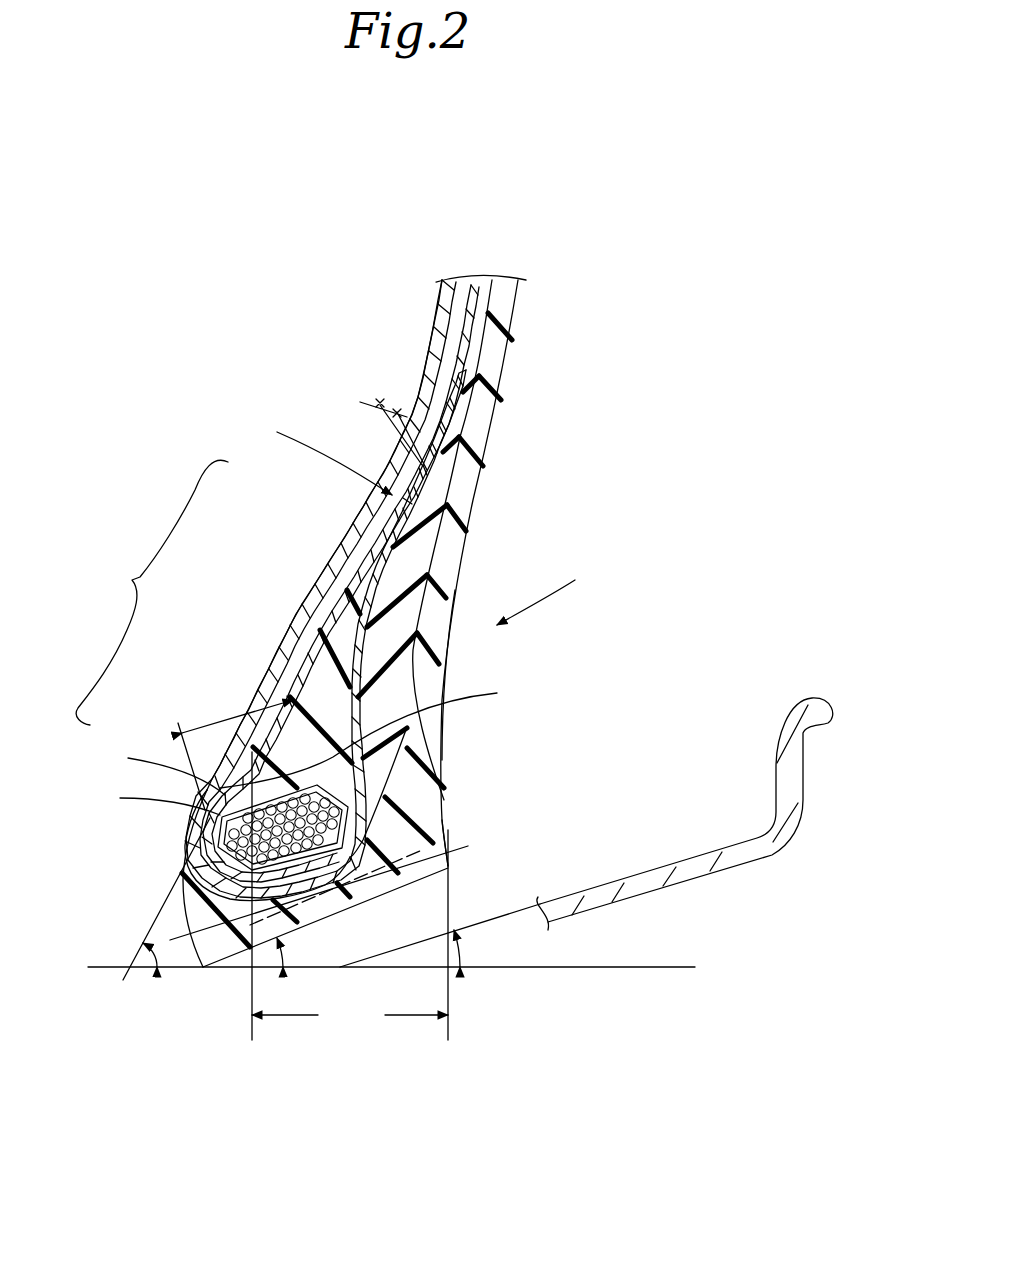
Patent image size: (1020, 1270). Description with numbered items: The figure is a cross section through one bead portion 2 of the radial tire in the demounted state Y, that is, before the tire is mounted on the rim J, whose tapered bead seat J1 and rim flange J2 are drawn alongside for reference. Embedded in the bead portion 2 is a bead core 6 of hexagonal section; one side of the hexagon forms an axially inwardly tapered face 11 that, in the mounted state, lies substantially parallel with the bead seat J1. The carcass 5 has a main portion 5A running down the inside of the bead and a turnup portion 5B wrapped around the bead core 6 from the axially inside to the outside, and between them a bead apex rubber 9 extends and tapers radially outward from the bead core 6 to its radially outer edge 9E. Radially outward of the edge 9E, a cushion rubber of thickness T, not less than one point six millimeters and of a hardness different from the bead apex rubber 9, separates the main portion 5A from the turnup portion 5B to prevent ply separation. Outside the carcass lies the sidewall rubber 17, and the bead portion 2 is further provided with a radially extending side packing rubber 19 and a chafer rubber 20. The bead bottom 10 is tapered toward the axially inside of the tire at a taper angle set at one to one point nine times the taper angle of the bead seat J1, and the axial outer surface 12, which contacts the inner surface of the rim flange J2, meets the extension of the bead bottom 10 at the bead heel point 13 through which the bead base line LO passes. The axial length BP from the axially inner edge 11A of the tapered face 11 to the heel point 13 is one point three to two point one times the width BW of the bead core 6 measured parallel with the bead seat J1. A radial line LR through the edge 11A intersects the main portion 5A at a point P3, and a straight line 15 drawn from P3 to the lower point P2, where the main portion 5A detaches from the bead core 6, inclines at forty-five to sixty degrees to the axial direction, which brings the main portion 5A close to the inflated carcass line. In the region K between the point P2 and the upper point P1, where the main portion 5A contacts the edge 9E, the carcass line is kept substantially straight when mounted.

The bead portion 2 is at (158, 848).
The carcass 5 is at (338, 589).
The main portion 5A is at (443, 341).
The turnup portion 5B is at (478, 388).
The bead core 6 is at (185, 874).
The bead apex rubber 9 is at (330, 678).
The radially outer edge 9E is at (412, 507).
The bead bottom 10 is at (340, 903).
The tapered face 11 is at (300, 877).
The axially inner edge 11A is at (175, 913).
The axial outer surface 12 is at (447, 761).
The bead heel point 13 is at (452, 850).
The straight line 15 is at (220, 807).
The sidewall rubber 17 is at (488, 416).
The side packing rubber 19 is at (405, 556).
The chafer rubber 20 is at (428, 805).
The rim J is at (586, 831).
The tapered bead seat J1 is at (638, 872).
The rim flange J2 is at (775, 782).
The bead base line LO is at (647, 970).
The axial length BP is at (350, 896).
The width of bead core BW is at (233, 717).
The region K is at (152, 592).
The demounted state Y is at (542, 589).
The thickness T is at (380, 400).
The upper point P1 is at (313, 451).
The lower point P2 is at (150, 799).
The intersecting point P3 is at (170, 762).
The radial line LR is at (377, 733).